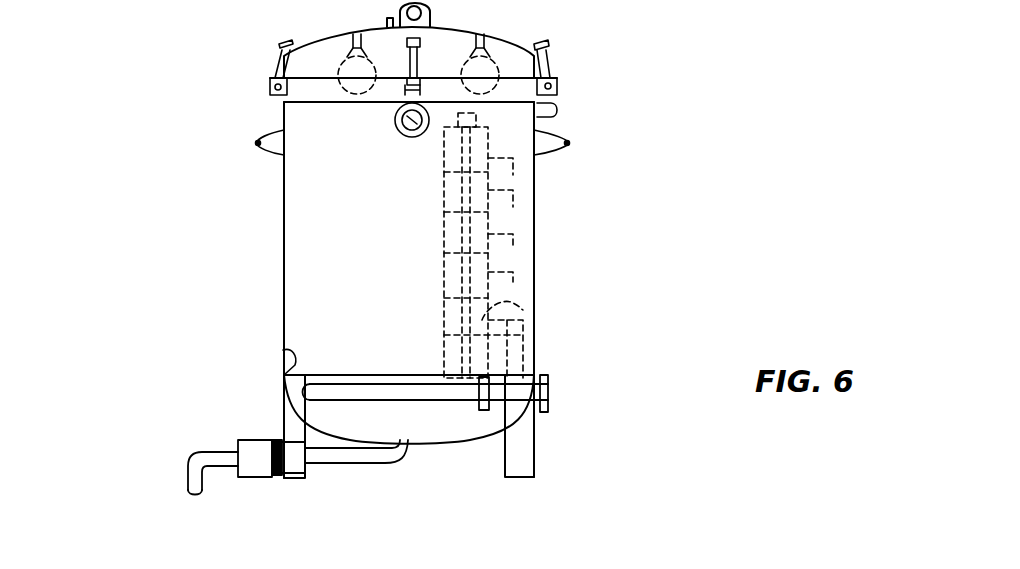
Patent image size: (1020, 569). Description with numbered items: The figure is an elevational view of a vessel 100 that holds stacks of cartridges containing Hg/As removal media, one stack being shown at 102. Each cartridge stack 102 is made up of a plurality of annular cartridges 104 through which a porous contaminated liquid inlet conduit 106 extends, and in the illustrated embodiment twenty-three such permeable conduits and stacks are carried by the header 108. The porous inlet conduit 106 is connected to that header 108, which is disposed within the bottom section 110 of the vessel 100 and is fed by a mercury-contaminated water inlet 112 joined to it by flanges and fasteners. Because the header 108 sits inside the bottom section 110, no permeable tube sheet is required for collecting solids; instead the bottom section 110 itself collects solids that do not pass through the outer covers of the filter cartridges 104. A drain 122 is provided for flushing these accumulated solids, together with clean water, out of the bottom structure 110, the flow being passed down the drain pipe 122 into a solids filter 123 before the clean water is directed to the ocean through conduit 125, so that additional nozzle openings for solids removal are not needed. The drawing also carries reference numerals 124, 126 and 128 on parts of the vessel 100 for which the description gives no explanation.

The vessel 100 is at (652, 100).
The cartridge stack 102 is at (440, 172).
The annular cartridges 104 is at (513, 175).
The porous inlet conduit 106 is at (462, 232).
The header 108 is at (445, 406).
The bottom section 110 is at (423, 446).
The mercury-contaminated water inlet 112 is at (536, 434).
The drain 122 is at (345, 466).
The solids filter 123 is at (250, 450).
The vessel body 124 is at (284, 302).
The conduit 125 is at (187, 468).
The bracket 126 is at (283, 350).
The side fitting 128 is at (556, 104).